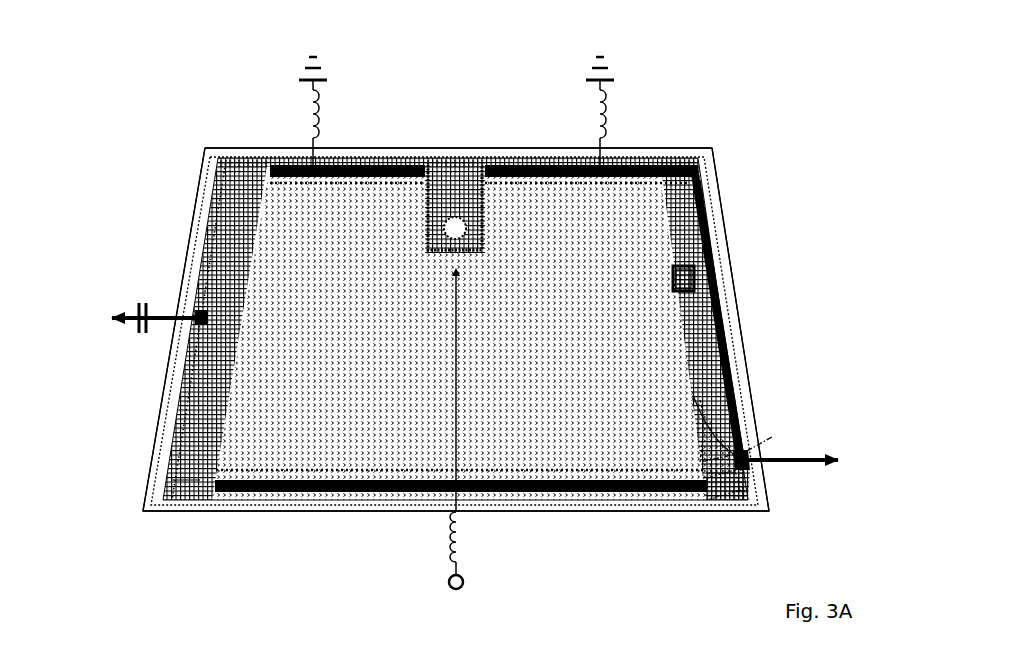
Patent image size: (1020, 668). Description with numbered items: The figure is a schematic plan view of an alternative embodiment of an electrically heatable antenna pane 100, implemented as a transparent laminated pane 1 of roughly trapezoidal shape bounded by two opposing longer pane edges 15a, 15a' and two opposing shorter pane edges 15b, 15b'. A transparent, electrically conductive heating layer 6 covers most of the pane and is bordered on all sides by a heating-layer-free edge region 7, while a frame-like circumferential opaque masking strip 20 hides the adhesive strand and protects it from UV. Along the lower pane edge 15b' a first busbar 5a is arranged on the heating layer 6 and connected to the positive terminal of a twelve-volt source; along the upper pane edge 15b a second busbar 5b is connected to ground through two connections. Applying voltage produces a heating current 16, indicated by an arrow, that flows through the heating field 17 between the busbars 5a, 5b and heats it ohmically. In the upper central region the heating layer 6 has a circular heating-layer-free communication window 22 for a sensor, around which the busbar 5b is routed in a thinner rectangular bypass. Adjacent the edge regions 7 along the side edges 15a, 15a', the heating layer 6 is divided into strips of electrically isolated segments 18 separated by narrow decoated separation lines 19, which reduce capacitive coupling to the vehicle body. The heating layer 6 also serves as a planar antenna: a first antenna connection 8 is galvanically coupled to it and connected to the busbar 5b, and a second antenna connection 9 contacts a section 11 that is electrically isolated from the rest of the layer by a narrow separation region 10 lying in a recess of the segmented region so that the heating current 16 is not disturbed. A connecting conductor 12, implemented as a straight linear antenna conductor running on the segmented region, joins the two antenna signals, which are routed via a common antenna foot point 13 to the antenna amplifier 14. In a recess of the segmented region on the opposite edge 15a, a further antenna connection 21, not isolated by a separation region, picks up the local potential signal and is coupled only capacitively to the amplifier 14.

The antenna pane 100 is at (186, 80).
The laminated pane 1 is at (197, 150).
The first busbar 5a is at (283, 490).
The second busbar 5b is at (308, 165).
The heating layer 6 is at (250, 312).
The heating-layer-free edge region 7 is at (198, 225).
The first antenna connection 8 is at (660, 166).
The second antenna connection 9 is at (747, 472).
The separation region 10 is at (697, 430).
The section 11 is at (706, 490).
The connecting conductor 12 is at (702, 212).
The antenna foot point 13 is at (752, 462).
The antenna amplifier 14 is at (474, 393).
The pane edge 15a is at (148, 329).
The pane edge 15a' is at (772, 329).
The upper pane edge 15b is at (458, 114).
The lower pane edge 15b' is at (456, 545).
The heating current 16 is at (455, 302).
The heating field 17 is at (516, 263).
The segments 18 is at (700, 265).
The separation lines 19 is at (700, 282).
The masking strip 20 is at (190, 470).
The further antenna connection 21 is at (200, 318).
The communication window 22 is at (459, 220).